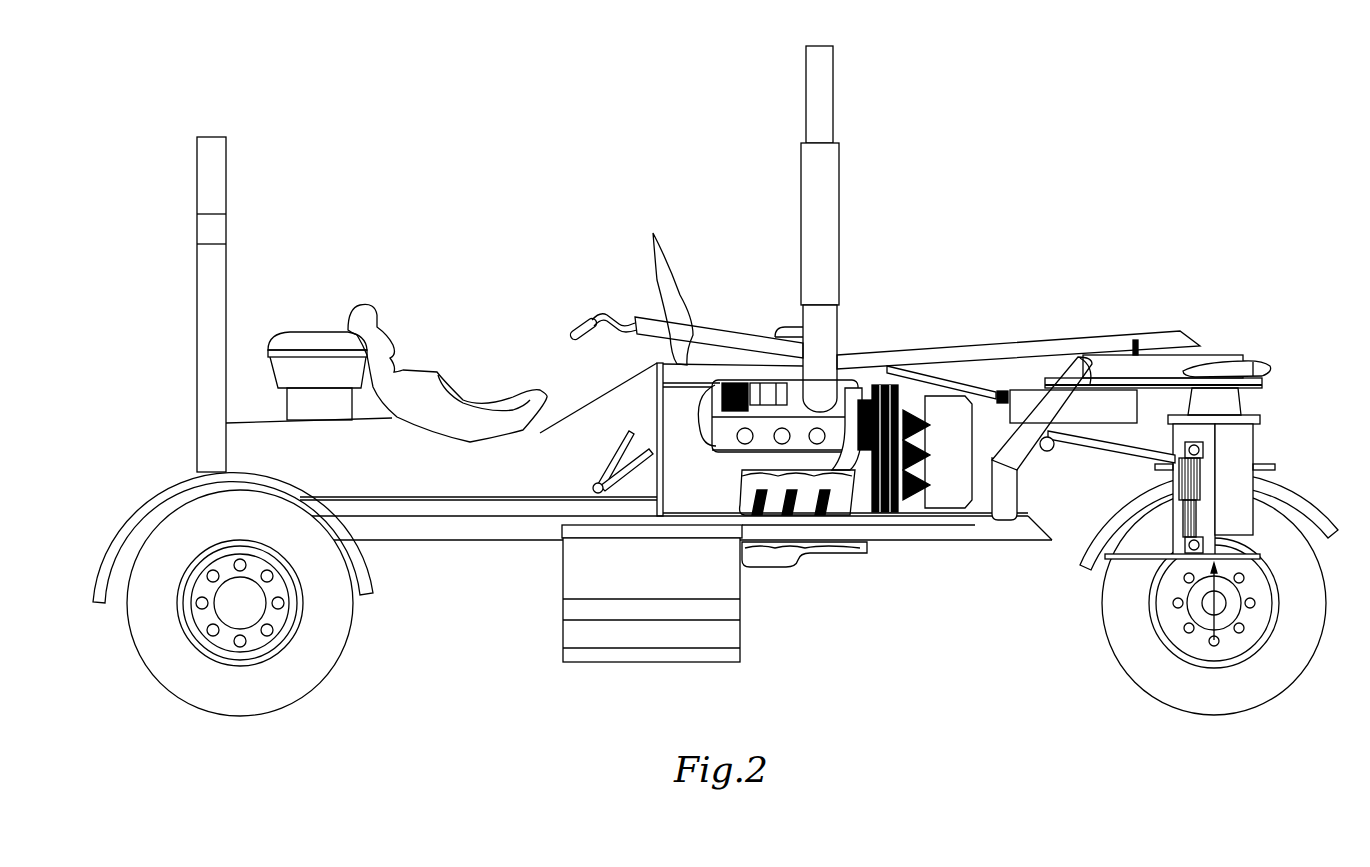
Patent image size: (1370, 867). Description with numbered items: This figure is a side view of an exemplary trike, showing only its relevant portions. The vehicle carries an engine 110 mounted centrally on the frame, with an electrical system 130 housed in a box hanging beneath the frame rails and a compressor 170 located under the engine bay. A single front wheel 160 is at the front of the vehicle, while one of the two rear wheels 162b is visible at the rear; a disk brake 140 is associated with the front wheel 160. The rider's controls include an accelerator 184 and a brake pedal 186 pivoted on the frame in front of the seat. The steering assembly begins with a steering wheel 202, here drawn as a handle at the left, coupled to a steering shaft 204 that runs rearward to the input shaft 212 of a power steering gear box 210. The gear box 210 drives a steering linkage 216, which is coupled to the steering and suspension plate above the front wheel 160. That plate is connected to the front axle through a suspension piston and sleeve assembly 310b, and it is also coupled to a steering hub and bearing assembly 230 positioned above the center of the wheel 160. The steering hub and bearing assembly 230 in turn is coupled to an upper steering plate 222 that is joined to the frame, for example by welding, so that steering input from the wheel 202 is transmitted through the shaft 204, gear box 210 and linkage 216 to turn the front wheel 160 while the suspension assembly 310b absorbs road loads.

The engine 110 is at (893, 524).
The electrical system 130 is at (662, 586).
The disk brake 140 is at (1202, 647).
The front wheel 160 is at (1108, 657).
The rear wheel 162b is at (306, 688).
The compressor 170 is at (778, 526).
The accelerator 184 is at (617, 452).
The brake pedal 186 is at (642, 452).
The steering wheel 202 is at (578, 322).
The steering shaft 204 is at (951, 383).
The power steering gear box 210 is at (1117, 420).
The input shaft 212 is at (1000, 388).
The steering linkage 216 is at (1101, 444).
The upper steering plate 222 is at (1262, 380).
The steering hub and bearing assembly 230 is at (1237, 408).
The suspension piston and sleeve assembly 310b is at (1250, 480).